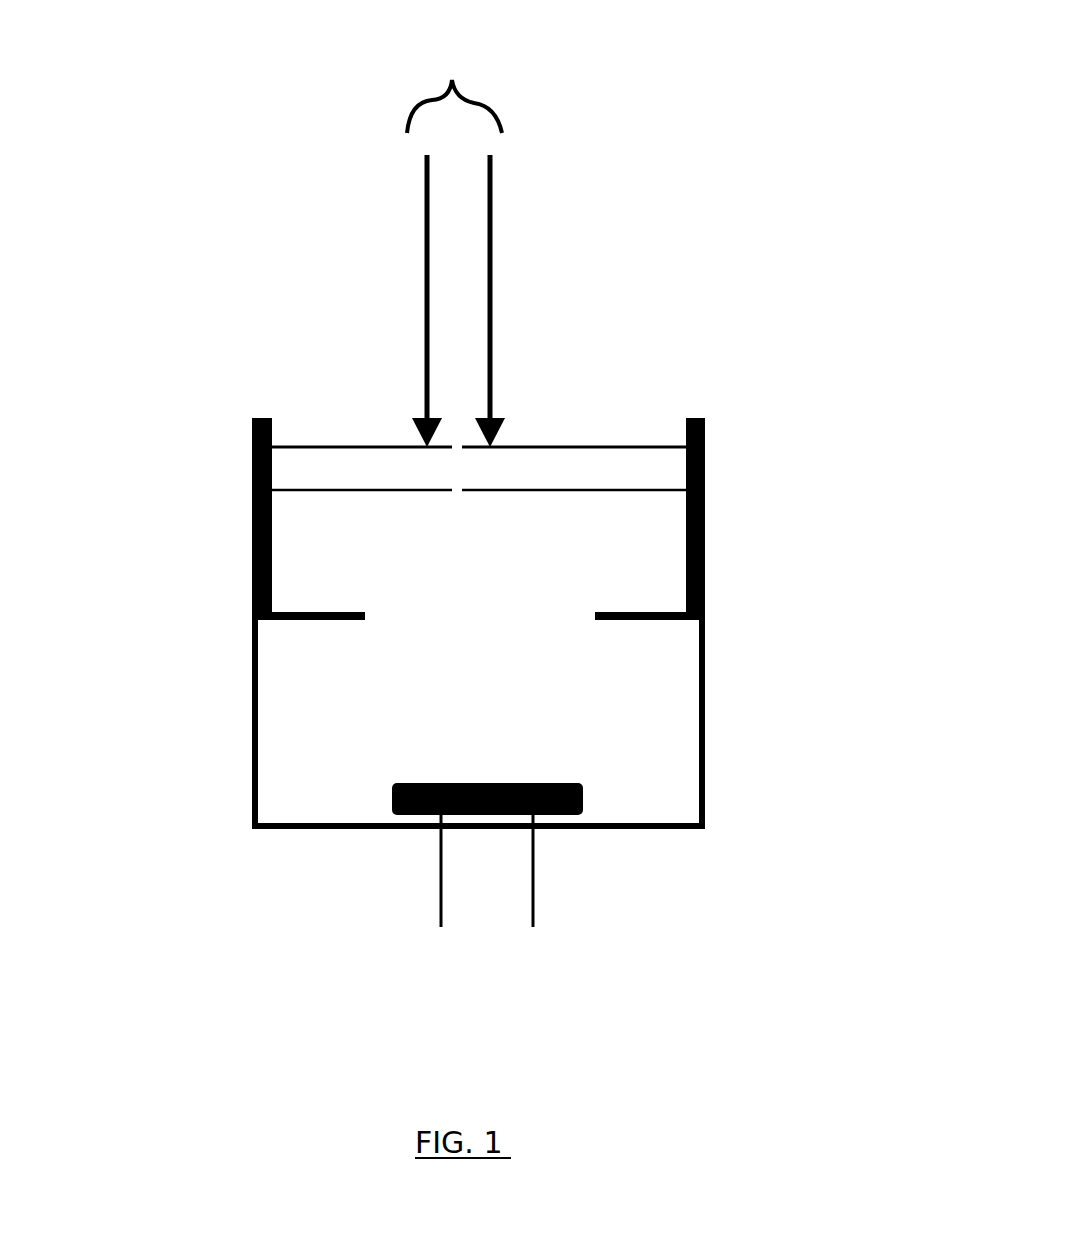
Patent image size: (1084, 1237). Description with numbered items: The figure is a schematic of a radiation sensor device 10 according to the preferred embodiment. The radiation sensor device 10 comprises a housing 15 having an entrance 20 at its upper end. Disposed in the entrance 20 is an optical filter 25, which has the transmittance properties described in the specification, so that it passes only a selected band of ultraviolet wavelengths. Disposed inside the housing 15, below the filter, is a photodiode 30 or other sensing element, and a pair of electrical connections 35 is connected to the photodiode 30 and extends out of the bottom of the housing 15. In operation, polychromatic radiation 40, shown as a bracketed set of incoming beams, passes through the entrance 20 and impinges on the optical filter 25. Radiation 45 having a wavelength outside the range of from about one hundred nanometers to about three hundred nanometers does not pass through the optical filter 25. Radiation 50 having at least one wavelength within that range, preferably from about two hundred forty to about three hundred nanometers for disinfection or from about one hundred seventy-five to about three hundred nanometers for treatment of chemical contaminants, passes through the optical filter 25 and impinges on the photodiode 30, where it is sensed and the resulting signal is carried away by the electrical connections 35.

The radiation sensor device 10 is at (168, 150).
The housing 15 is at (738, 690).
The entrance 20 is at (304, 398).
The optical filter 25 is at (632, 451).
The photodiode 30 is at (583, 800).
The electrical connections 35 is at (545, 901).
The polychromatic radiation 40 is at (454, 73).
The radiation outside the passband 45 is at (425, 257).
The radiation within the passband 50 is at (467, 212).